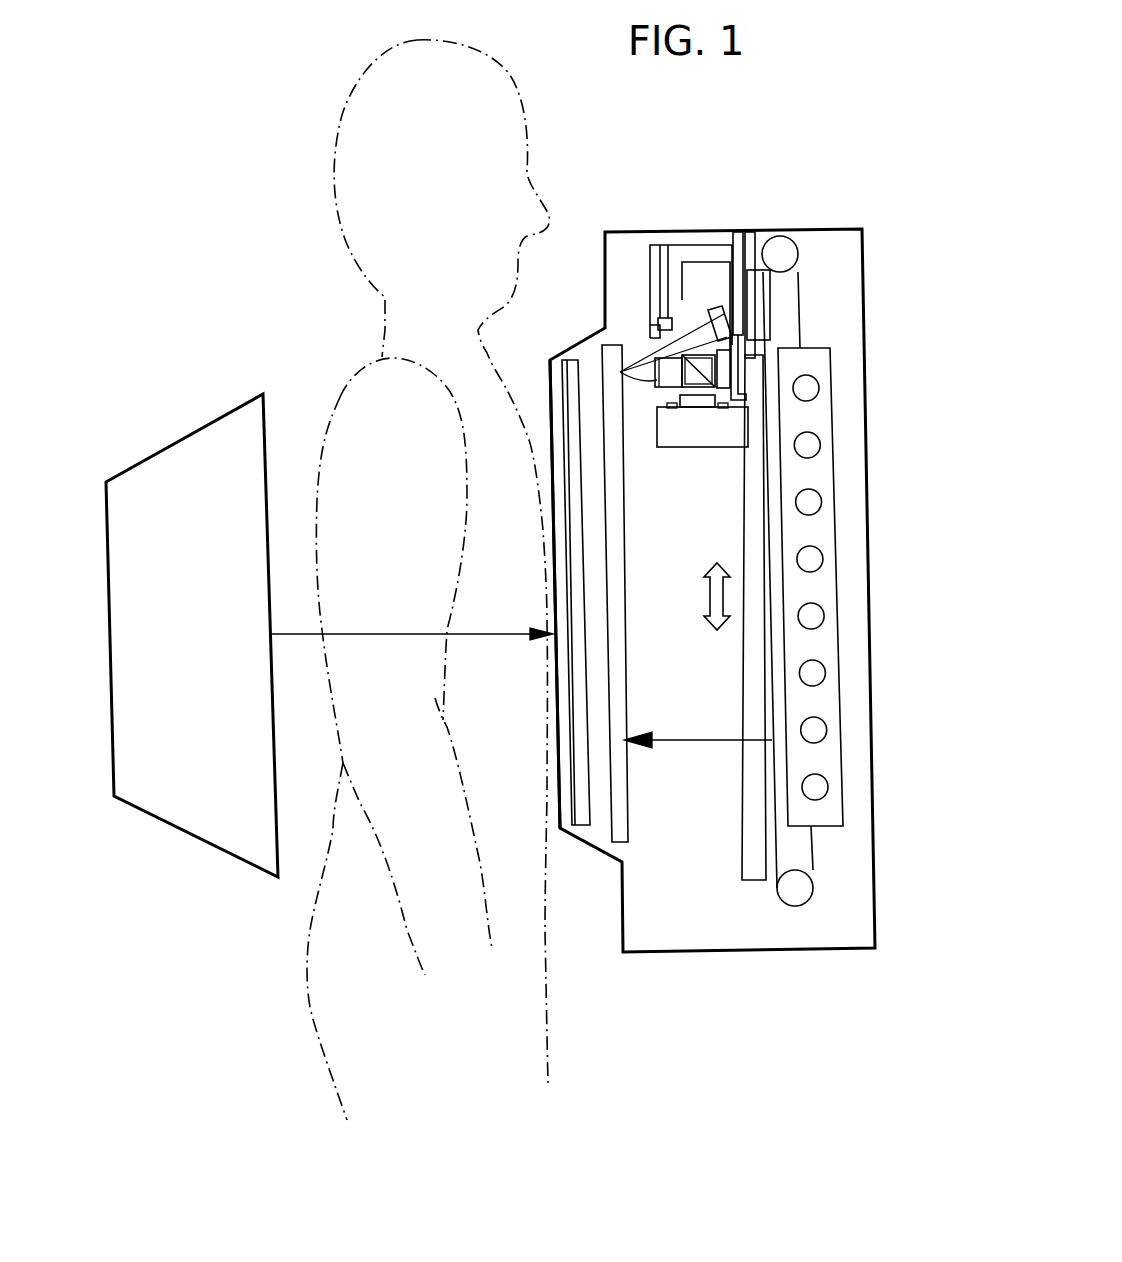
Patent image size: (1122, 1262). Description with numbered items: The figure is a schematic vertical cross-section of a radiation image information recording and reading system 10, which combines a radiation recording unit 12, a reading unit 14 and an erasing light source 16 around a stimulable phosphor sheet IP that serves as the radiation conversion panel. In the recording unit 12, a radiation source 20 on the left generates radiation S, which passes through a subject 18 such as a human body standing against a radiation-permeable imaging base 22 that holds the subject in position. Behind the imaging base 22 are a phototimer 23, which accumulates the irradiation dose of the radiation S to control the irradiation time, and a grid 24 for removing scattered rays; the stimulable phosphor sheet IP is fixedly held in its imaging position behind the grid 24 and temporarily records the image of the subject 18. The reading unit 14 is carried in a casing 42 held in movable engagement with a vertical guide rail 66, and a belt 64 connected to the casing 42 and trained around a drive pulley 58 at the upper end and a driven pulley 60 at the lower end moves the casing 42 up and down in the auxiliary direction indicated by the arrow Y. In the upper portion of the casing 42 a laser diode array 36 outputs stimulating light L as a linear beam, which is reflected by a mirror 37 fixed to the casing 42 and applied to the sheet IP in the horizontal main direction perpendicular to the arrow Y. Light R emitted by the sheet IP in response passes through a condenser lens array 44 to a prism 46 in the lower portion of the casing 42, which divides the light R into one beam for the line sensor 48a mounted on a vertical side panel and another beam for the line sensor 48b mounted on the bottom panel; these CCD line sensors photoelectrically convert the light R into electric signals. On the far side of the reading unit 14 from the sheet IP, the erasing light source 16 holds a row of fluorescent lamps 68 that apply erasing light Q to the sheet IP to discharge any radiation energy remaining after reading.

The radiation image information recording and reading system 10 is at (655, 526).
The radiation recording unit 12 is at (517, 380).
The reading unit 14 is at (798, 355).
The erasing light source 16 is at (853, 625).
The subject 18 is at (340, 396).
The radiation source 20 is at (240, 396).
The imaging base 22 is at (547, 402).
The phototimer 23 is at (558, 505).
The grid 24 is at (578, 708).
The laser diode array 36 is at (663, 324).
The mirror 37 is at (733, 317).
The casing 42 is at (713, 250).
The condenser lens array 44 is at (667, 378).
The prism 46 is at (694, 328).
The line sensor 48a is at (723, 367).
The line sensor 48b is at (704, 398).
The drive pulley 58 is at (780, 250).
The driven pulley 60 is at (797, 893).
The belt 64 is at (800, 343).
The guide rail 66 is at (753, 862).
The fluorescent lamps 68 is at (814, 732).
The stimulable phosphor sheet IP is at (626, 670).
The stimulating light L is at (641, 362).
The light emitted from the stimulable phosphor sheet R is at (644, 383).
The radiation S is at (298, 633).
The arrow indicating auxiliary direction Y is at (704, 596).
The erasing light Q is at (714, 743).